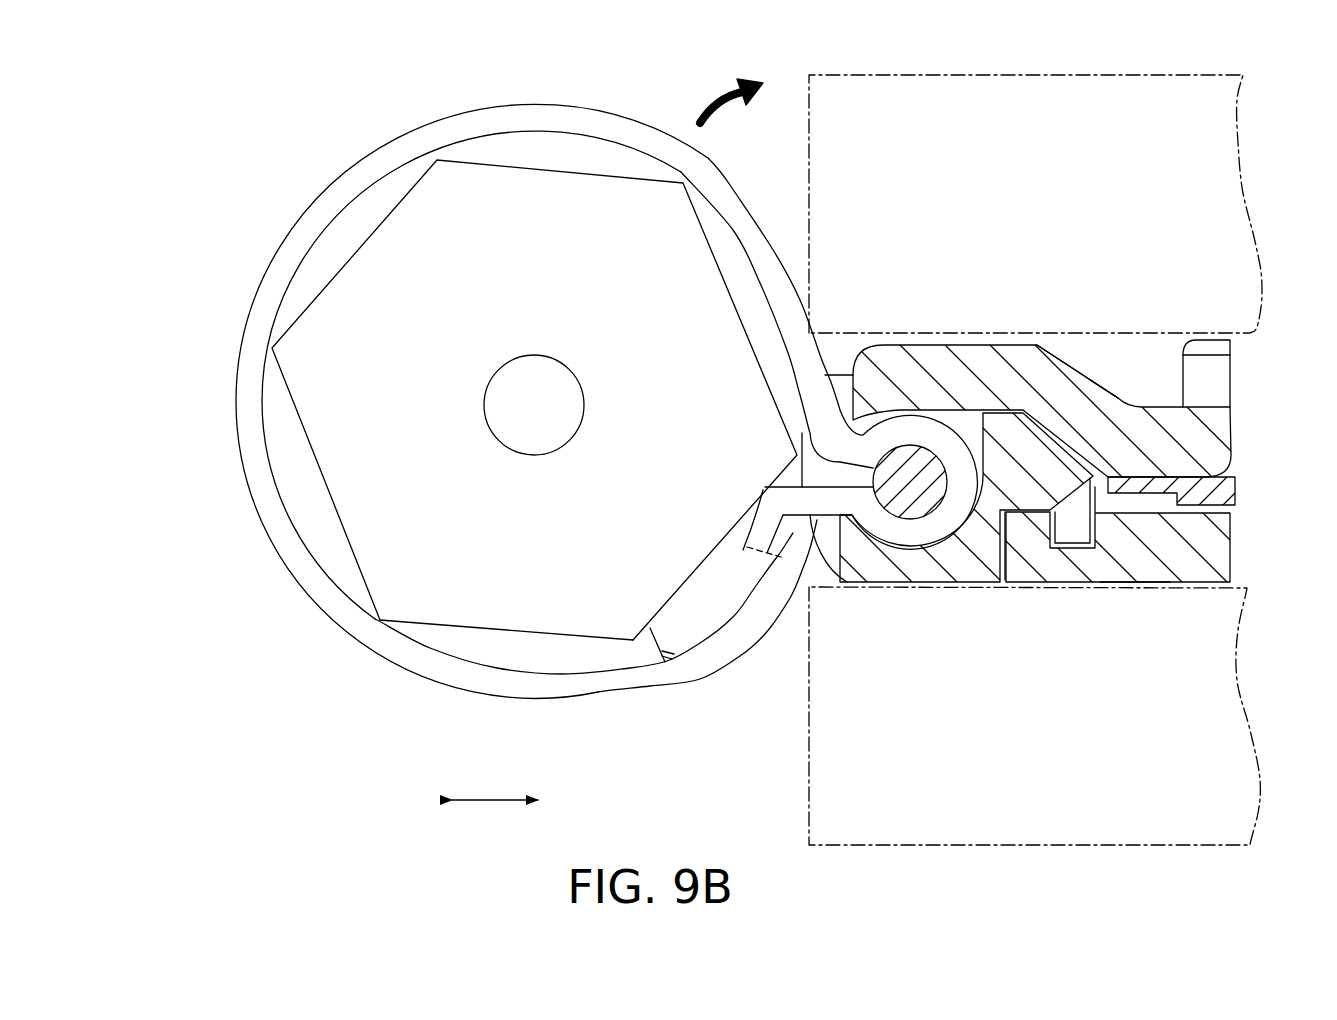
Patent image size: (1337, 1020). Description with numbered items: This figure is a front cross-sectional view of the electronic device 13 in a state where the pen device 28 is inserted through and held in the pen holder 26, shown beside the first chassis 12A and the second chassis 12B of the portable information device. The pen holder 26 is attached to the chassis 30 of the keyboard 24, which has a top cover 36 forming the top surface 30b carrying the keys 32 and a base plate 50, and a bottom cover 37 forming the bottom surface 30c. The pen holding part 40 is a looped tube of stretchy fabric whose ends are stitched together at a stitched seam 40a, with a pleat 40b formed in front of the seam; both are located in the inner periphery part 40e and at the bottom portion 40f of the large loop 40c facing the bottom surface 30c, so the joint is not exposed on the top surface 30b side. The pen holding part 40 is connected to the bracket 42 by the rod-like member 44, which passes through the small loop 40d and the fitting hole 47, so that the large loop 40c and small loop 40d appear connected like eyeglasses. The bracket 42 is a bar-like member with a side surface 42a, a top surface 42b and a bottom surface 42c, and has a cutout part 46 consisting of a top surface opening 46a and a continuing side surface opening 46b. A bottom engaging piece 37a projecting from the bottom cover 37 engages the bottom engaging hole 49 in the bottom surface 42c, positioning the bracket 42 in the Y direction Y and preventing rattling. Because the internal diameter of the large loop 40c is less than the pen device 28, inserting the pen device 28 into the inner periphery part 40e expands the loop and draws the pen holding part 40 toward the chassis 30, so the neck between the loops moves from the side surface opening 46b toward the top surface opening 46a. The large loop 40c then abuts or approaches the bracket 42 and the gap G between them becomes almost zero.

The electronic device 13 is at (178, 162).
The pen holder 26 is at (326, 127).
The pen device 28 is at (512, 613).
The pen holding part 40 is at (536, 100).
The stitched seam 40a is at (777, 557).
The pleat 40b is at (657, 662).
The large loop 40c is at (283, 236).
The small loop 40d is at (947, 445).
The inner periphery part 40e is at (313, 510).
The bottom portion 40f is at (592, 682).
The bracket 42 is at (913, 589).
The side surface 42a is at (800, 440).
The top surface 42b is at (845, 383).
The bottom surface 42c is at (952, 577).
The rod-like member 44 is at (906, 509).
The cutout part 46 is at (820, 467).
The top surface opening 46a is at (843, 400).
The side surface opening 46b is at (835, 520).
The fitting hole 47 is at (928, 455).
The bottom engaging hole 49 is at (1008, 560).
The base plate 50 is at (1212, 488).
The keyboard 24 is at (1123, 376).
The chassis 30 is at (1118, 458).
The top surface 30b is at (1120, 368).
The bottom surface 30c is at (1135, 585).
The key 32 is at (1208, 362).
The top cover 36 is at (1170, 348).
The bottom cover 37 is at (1193, 591).
The bottom engaging piece 37a is at (1033, 530).
The first chassis 12A is at (996, 852).
The second chassis 12B is at (996, 70).
The gap G is at (850, 372).
The Y direction Y is at (495, 816).